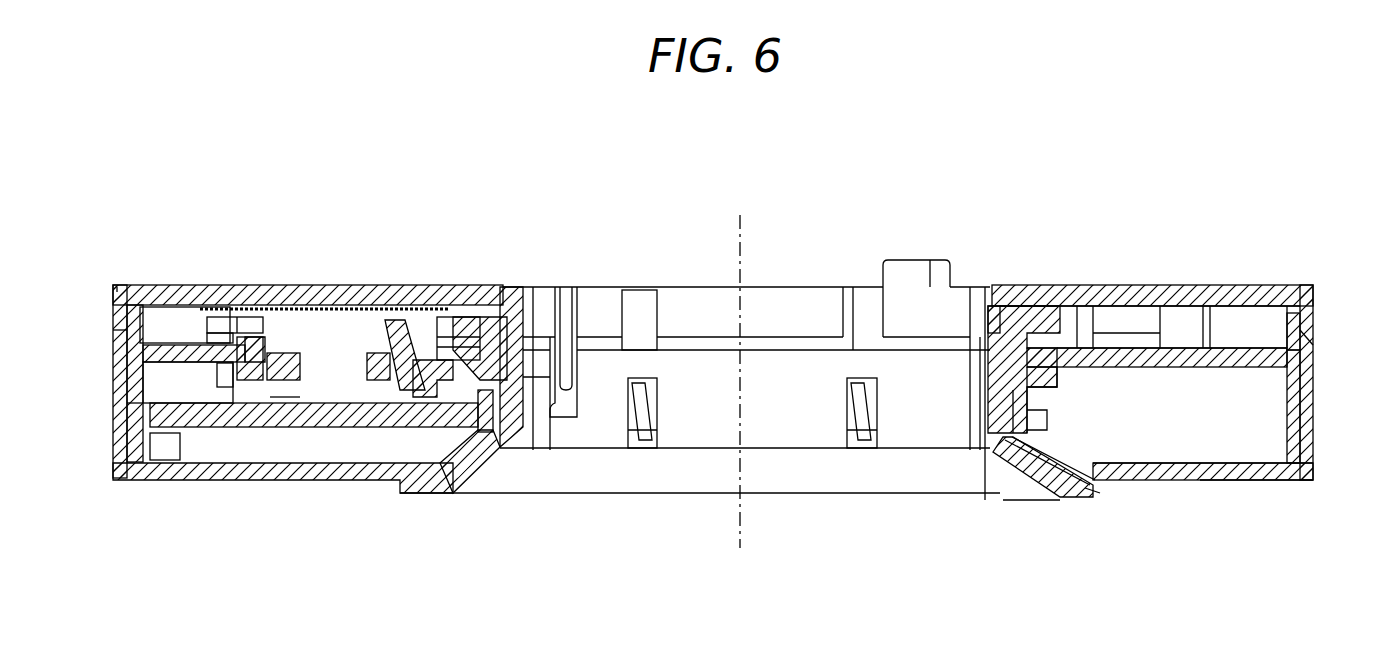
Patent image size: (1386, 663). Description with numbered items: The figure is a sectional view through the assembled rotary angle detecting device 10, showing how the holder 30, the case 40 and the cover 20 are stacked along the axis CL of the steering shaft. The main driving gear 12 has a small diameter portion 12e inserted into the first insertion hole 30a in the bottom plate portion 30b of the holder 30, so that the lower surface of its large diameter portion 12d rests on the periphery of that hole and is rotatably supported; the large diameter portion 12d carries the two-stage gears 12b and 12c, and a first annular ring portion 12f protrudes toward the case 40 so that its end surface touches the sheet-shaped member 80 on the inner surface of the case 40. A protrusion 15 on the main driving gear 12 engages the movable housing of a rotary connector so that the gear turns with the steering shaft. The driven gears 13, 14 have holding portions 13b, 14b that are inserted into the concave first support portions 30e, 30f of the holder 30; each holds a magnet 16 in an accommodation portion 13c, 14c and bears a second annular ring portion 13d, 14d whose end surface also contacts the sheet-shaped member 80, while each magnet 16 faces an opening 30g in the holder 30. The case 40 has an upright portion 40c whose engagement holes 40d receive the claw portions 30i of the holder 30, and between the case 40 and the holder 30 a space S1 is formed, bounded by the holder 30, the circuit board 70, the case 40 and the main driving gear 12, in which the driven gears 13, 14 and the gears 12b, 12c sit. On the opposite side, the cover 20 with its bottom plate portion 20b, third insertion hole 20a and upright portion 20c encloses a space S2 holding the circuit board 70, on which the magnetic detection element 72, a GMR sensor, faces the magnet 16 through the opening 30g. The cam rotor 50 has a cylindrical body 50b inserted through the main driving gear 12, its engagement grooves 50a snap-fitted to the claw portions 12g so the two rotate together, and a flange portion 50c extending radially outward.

The rotary angle detecting device 10 is at (415, 140).
The main driving gear 12 is at (522, 276).
The gear 12b is at (445, 320).
The gear 12c is at (486, 420).
The large diameter portion 12d is at (528, 395).
The small diameter portion 12e is at (532, 392).
The first annular ring portion 12f is at (478, 300).
The claw portion 12g is at (646, 378).
The driven gear 13 is at (209, 265).
The driven gear 14 is at (201, 309).
The holding portion 13b is at (335, 256).
The holding portion 14b is at (272, 305).
The accommodation portion 13c is at (396, 445).
The accommodation portion 14c is at (352, 372).
The second annular ring portion 13d is at (423, 275).
The second annular ring portion 14d is at (398, 305).
The protrusion 15 is at (900, 262).
The magnet 16 is at (300, 340).
The cover 20 is at (1267, 491).
The third insertion hole 20a is at (1010, 450).
The bottom plate portion 20b is at (1217, 478).
The upright portion 20c is at (1305, 426).
The holder 30 is at (178, 300).
The first insertion hole 30a is at (990, 440).
The bottom plate portion 30b is at (1187, 480).
The first support portion 30e is at (325, 177).
The first support portion 30f is at (258, 305).
The opening 30g is at (287, 398).
The claw portion 30i is at (1311, 338).
The case 40 is at (141, 277).
The upright portion 40c is at (117, 332).
The engagement hole 40d is at (1312, 304).
The cam rotor 50 is at (1054, 508).
The engagement groove 50a is at (653, 430).
The cylindrical body 50b is at (808, 438).
The flange portion 50c is at (1100, 493).
The circuit board 70 is at (214, 438).
The magnetic detection element 72 is at (325, 382).
The sheet-shaped member 80 is at (284, 335).
The space S1 is at (117, 289).
The space S2 is at (118, 403).
The axis CL is at (741, 524).